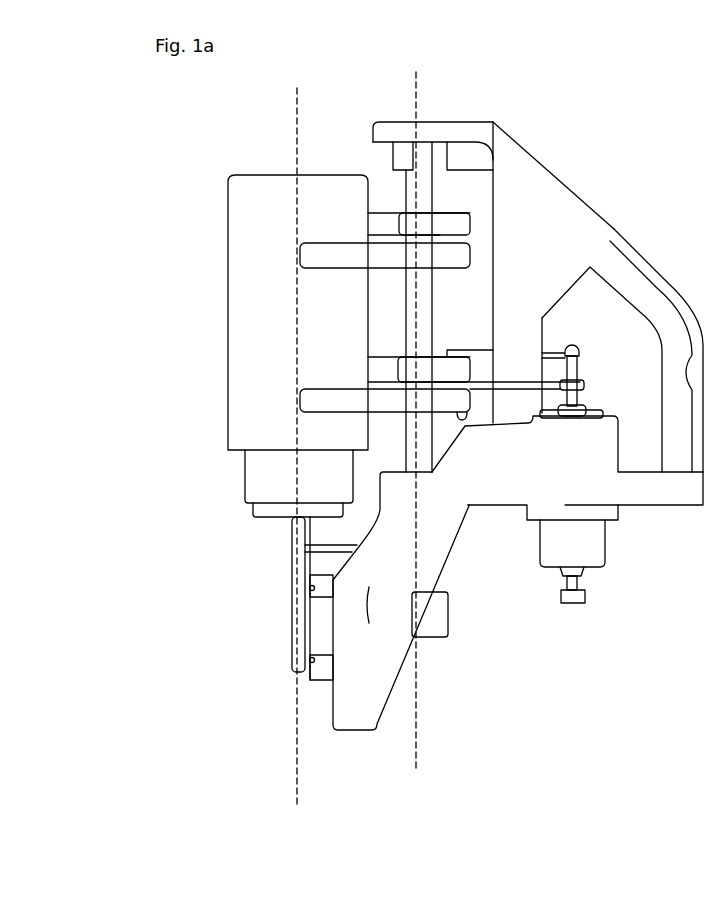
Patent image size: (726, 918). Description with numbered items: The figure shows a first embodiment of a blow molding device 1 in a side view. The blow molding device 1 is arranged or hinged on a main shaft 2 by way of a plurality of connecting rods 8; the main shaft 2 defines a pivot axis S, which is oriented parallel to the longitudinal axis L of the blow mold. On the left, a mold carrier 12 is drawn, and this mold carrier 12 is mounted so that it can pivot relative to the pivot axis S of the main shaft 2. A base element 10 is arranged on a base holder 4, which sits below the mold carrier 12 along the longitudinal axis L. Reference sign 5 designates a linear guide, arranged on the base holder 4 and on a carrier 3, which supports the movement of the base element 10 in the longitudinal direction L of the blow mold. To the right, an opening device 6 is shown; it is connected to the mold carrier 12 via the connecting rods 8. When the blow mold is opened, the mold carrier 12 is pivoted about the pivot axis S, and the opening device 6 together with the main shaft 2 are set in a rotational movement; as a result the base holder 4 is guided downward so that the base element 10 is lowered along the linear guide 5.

The blow molding device 1 is at (485, 98).
The main shaft 2 is at (407, 180).
The carrier 3 is at (568, 238).
The base holder 4 is at (273, 513).
The linear guide 5 is at (323, 663).
The opening device 6 is at (575, 548).
The connecting rods 8 is at (442, 366).
The base element 10 is at (270, 478).
The mold carrier 12 is at (263, 227).